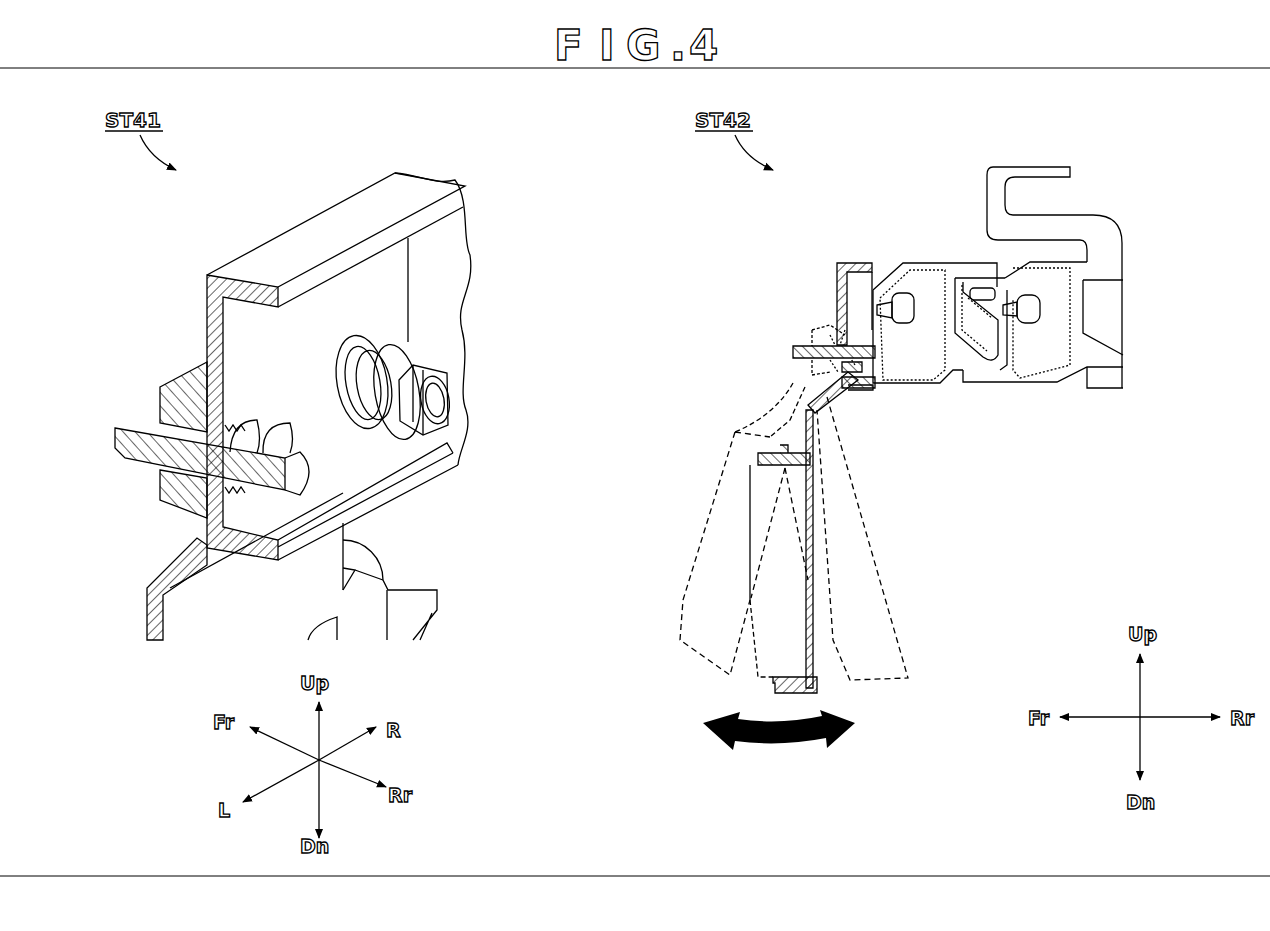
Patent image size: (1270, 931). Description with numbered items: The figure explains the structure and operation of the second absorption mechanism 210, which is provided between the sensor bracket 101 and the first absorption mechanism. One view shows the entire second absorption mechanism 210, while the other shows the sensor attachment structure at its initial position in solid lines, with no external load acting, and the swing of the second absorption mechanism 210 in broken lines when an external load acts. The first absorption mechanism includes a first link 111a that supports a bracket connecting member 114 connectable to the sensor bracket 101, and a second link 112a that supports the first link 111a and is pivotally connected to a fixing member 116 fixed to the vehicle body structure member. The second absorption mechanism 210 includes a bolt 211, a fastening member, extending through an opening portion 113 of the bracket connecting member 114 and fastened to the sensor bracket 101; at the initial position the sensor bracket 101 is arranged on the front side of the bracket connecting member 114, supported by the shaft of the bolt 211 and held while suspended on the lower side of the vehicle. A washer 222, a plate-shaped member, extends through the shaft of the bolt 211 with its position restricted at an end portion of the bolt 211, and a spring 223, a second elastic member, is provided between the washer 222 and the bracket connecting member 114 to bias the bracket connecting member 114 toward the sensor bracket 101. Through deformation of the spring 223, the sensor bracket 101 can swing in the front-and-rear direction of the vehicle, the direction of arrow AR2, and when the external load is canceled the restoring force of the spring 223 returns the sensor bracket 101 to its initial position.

The sensor bracket 101 is at (148, 618).
The opening portion 113 is at (203, 397).
The bracket connecting member 114 is at (288, 257).
The first link 111a is at (943, 270).
The second link 112a is at (1006, 385).
The fixing member 116 is at (1043, 202).
The second absorption mechanism 210 is at (590, 188).
The bolt 211 is at (435, 398).
The washer 222 is at (420, 360).
The spring 223 is at (380, 357).
The arrow AR2 is at (760, 748).